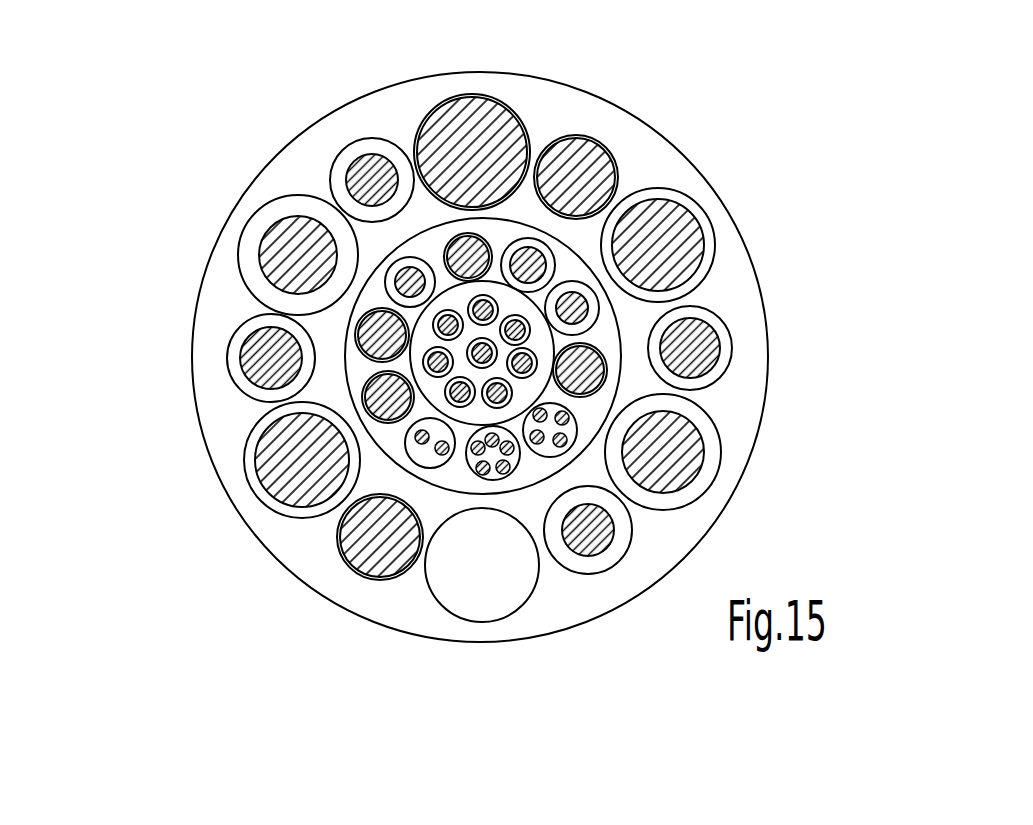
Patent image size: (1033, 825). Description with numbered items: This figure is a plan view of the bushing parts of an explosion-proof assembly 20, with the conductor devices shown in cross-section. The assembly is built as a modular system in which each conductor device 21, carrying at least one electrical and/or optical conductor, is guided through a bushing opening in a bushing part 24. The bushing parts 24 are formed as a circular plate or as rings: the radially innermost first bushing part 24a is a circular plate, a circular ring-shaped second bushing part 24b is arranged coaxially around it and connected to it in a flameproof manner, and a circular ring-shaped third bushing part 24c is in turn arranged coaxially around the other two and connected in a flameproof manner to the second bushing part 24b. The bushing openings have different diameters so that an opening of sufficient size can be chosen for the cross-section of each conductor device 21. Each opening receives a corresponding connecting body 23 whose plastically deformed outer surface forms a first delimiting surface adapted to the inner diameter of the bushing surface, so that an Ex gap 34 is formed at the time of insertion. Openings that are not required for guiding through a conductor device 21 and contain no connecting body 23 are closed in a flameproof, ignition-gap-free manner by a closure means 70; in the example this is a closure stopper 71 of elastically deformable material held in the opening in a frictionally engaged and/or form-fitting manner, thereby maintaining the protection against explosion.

The explosion-proof assembly 20 is at (778, 175).
The conductor device 21 is at (672, 230).
The connecting body 23 is at (410, 257).
The bushing part 24 is at (483, 256).
The first bushing part 24a is at (412, 362).
The second bushing part 24b is at (503, 240).
The third bushing part 24c is at (740, 303).
The Ex gap 34 is at (237, 280).
The closure means 70 is at (482, 627).
The closure stopper 71 is at (482, 595).